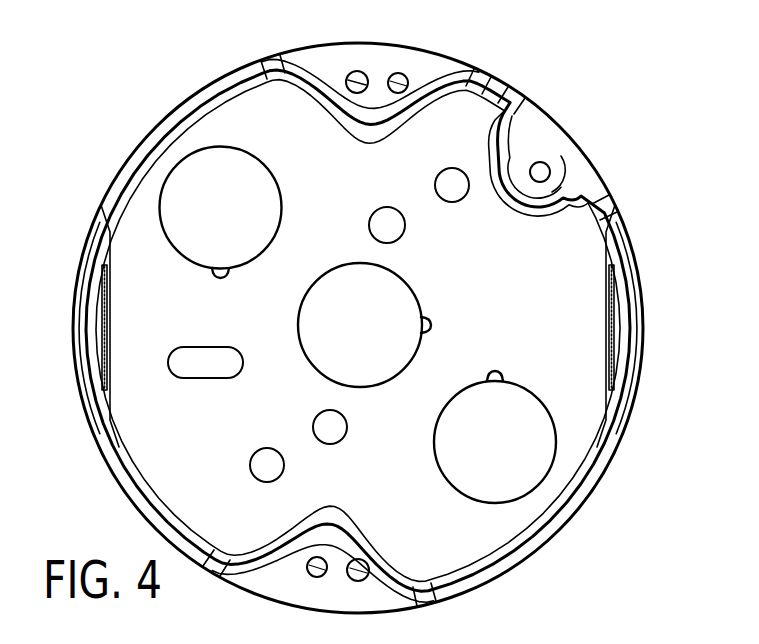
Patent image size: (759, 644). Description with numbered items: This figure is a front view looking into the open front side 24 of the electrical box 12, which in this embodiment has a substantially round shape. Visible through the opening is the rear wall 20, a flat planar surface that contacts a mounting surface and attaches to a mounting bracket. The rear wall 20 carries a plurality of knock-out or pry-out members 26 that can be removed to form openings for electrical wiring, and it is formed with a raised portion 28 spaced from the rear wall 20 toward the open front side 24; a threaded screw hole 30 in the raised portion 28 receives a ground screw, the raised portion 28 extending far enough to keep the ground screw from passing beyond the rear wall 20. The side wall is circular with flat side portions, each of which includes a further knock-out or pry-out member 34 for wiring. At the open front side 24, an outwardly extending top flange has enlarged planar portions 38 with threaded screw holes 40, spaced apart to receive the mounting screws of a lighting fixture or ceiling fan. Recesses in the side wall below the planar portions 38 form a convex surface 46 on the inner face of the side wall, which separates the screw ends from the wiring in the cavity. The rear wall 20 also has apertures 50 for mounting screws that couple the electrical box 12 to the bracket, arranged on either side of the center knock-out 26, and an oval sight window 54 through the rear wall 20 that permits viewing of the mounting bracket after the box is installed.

The electrical box 12 is at (645, 137).
The rear wall 20 is at (577, 273).
The open front side 24 is at (167, 138).
The knock-out or pry-out member 26 is at (198, 207).
The raised portion 28 is at (580, 166).
The threaded screw hole 30 is at (544, 166).
The knock-out or pry-out member 34 is at (115, 316).
The enlarged planar portion 38 is at (435, 70).
The threaded screw hole 40 is at (390, 75).
The convex surface 46 is at (247, 73).
The aperture 50 is at (438, 196).
The sight window 54 is at (158, 376).